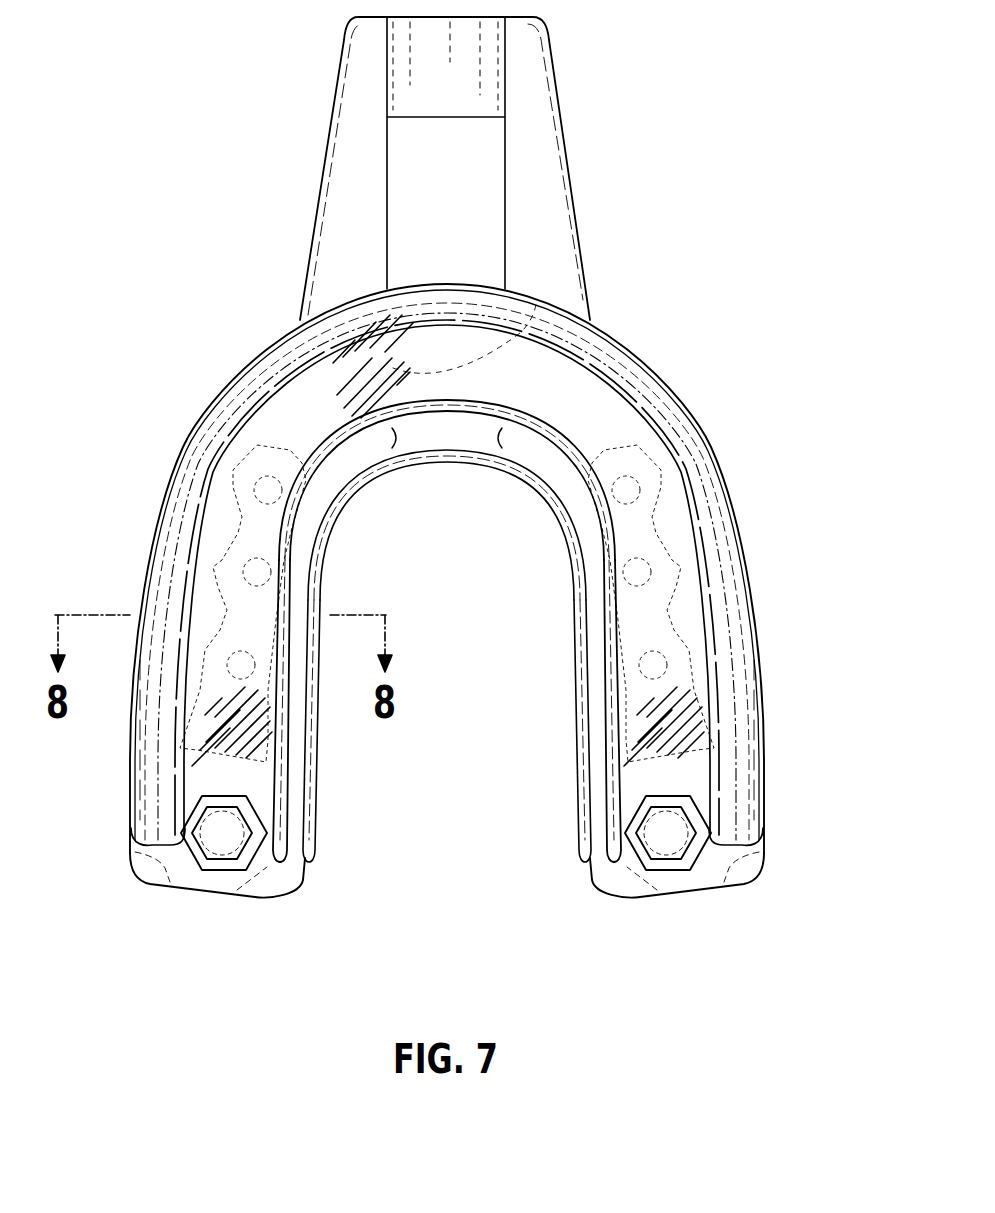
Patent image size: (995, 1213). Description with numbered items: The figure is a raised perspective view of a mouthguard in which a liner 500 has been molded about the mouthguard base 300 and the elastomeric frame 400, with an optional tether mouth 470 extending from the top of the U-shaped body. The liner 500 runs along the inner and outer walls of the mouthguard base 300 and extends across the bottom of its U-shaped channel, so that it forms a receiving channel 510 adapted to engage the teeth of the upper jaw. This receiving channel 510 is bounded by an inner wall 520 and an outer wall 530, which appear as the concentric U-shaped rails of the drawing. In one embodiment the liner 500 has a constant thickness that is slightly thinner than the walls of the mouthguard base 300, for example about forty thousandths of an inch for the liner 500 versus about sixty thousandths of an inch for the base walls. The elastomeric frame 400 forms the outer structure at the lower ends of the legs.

The tether mouth 470 is at (532, 128).
The liner 500 is at (395, 568).
The receiving channel 510 is at (288, 418).
The mouthguard base 300 is at (447, 631).
The inner wall 520 is at (293, 722).
The outer wall 530 is at (130, 745).
The elastomeric frame 400 is at (768, 834).